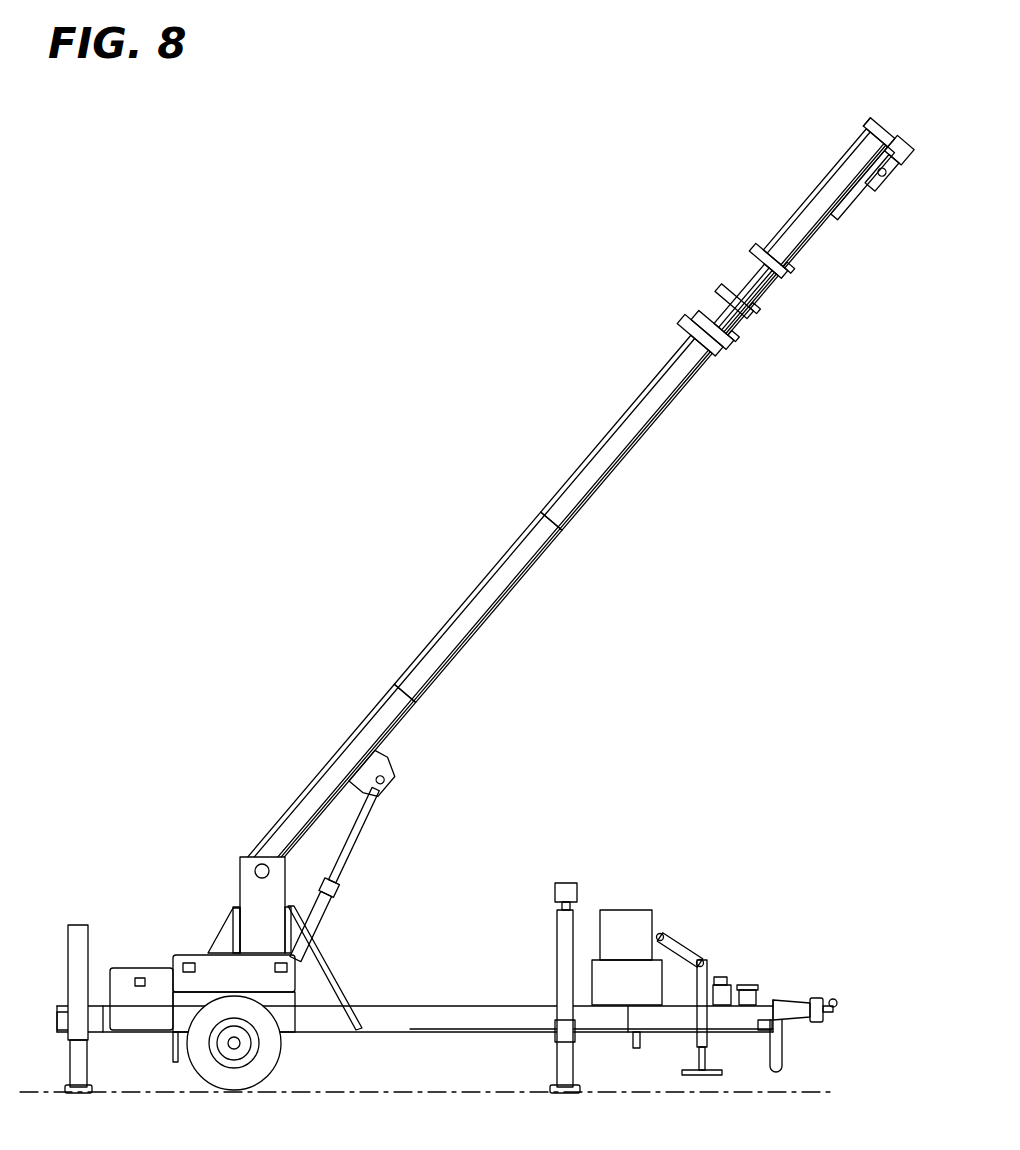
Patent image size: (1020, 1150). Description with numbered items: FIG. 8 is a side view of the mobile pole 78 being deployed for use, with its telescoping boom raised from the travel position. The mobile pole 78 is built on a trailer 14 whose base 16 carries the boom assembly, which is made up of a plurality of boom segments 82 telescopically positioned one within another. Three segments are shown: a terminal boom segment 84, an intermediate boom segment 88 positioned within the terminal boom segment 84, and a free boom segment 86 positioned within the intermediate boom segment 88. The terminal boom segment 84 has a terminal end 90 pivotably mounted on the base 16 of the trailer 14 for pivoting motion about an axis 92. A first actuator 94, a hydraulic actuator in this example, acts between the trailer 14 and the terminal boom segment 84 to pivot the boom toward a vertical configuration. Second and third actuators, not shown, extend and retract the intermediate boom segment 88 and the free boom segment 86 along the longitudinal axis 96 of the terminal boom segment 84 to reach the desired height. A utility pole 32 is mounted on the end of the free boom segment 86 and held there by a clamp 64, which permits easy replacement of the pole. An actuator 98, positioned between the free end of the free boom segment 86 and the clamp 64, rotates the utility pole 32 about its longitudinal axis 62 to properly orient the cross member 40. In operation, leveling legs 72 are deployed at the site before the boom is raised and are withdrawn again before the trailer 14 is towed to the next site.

The trailer 14 is at (447, 999).
The base 16 is at (483, 1006).
The utility pole 32 is at (795, 228).
The cross member 40 is at (901, 160).
The longitudinal axis 62 is at (890, 124).
The clamp 64 is at (723, 288).
The leveling legs 72 is at (560, 1068).
The mobile pole 78 is at (589, 472).
The boom segments 82 is at (639, 386).
The terminal boom segment 84 is at (295, 798).
The free boom segment 86 is at (633, 447).
The intermediate boom segment 88 is at (438, 643).
The terminal end 90 is at (215, 875).
The axis 92 is at (256, 874).
The first actuator 94 is at (335, 892).
The longitudinal axis 96 is at (893, 125).
The actuator 98 is at (692, 337).